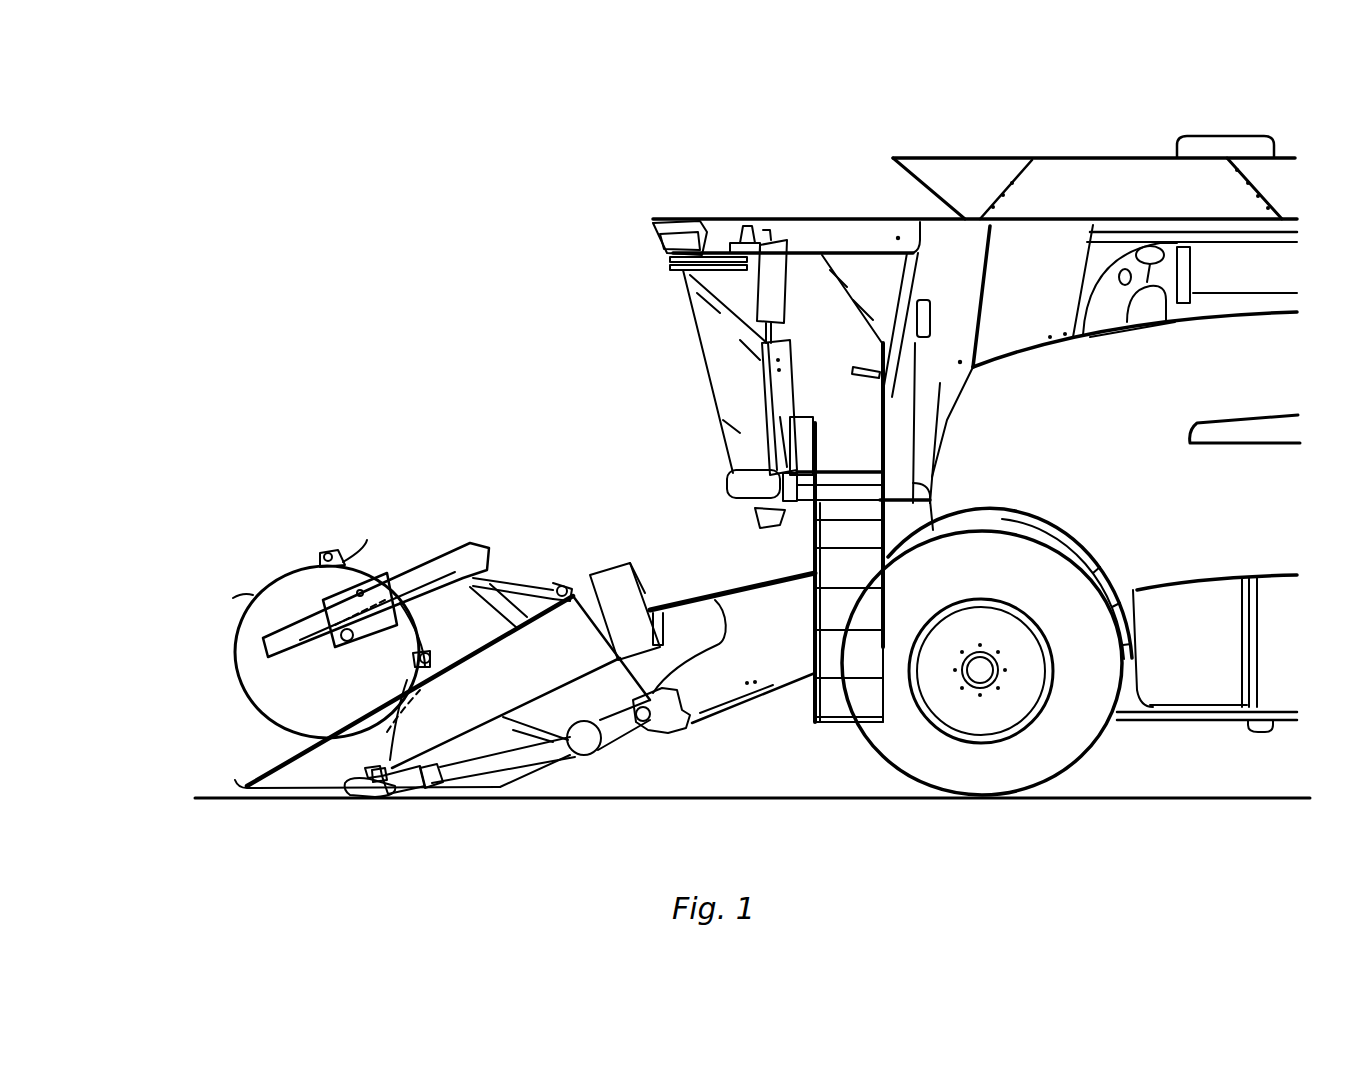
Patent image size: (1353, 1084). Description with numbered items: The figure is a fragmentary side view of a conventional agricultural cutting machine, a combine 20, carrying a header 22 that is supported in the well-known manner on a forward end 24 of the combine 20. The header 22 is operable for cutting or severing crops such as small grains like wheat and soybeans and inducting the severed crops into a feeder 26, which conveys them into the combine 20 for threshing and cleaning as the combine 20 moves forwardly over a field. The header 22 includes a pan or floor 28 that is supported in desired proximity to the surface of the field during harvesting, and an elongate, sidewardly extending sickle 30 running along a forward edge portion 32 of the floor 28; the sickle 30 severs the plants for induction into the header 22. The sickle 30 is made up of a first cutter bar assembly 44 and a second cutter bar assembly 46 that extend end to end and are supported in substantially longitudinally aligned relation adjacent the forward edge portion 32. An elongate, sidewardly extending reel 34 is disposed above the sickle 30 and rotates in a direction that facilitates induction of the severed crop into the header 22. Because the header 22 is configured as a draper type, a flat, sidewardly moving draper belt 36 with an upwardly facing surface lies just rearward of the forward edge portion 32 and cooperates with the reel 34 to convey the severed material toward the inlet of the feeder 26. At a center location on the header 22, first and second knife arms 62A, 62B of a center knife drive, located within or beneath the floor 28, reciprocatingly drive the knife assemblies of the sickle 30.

The combine 20 is at (1119, 135).
The header 22 is at (511, 571).
The forward end 24 is at (603, 565).
The feeder 26 is at (683, 605).
The floor 28 is at (516, 778).
The sickle 30 is at (380, 842).
The forward edge portion 32 is at (371, 775).
The reel 34 is at (328, 550).
The draper belt 36 is at (452, 750).
The first cutter bar assembly 44 is at (380, 842).
The second cutter bar assembly 46 is at (355, 800).
The first knife arm 62A is at (237, 755).
The second knife arm 62B is at (380, 771).